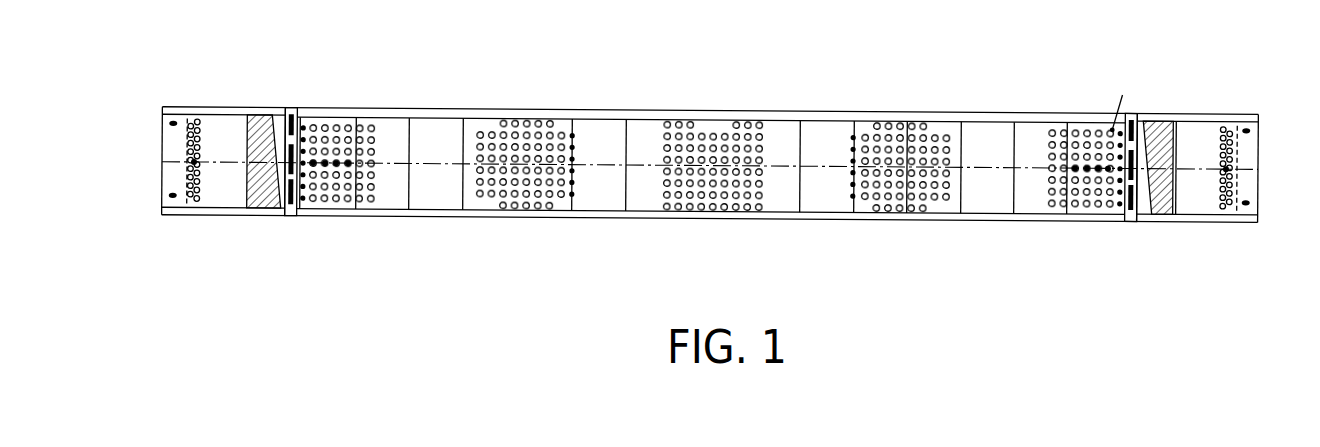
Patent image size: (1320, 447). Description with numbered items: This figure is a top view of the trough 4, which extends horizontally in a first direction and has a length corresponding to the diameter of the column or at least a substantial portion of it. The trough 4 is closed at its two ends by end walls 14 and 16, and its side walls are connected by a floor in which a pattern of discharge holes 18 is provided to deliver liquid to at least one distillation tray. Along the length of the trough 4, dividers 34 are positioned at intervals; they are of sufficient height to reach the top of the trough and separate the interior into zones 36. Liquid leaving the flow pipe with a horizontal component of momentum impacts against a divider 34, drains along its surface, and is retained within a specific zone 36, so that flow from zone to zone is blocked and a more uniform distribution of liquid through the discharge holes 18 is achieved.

The trough 4 is at (442, 118).
The end wall 14 is at (1259, 160).
The end wall 16 is at (152, 164).
The discharge holes 18 is at (757, 138).
The dividers 34 is at (807, 136).
The zones 36 is at (988, 148).